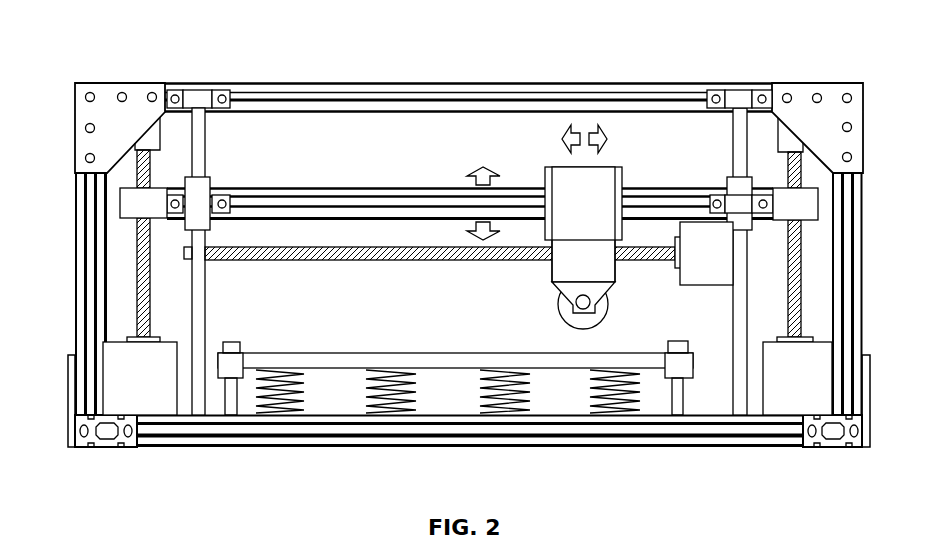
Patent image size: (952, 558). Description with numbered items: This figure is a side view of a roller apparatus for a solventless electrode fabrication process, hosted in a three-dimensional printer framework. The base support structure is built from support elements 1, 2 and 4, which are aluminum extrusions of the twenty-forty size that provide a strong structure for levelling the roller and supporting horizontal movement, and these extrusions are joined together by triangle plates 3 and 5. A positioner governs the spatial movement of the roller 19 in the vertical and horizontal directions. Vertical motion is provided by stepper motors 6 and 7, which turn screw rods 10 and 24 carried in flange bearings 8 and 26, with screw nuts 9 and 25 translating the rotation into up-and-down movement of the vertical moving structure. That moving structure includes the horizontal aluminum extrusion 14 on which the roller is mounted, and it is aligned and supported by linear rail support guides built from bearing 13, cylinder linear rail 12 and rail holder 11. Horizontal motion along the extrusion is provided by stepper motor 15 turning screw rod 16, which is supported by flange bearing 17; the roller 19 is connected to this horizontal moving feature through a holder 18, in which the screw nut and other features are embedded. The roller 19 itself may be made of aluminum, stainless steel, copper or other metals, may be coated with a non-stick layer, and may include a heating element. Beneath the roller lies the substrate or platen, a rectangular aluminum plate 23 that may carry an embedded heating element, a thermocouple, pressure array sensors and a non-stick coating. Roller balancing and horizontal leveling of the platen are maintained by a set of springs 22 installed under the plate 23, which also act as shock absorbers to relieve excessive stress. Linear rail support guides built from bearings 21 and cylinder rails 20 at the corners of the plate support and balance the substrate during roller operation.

The support element 1 is at (102, 262).
The support element 2 is at (282, 96).
The triangle plate 3 is at (107, 88).
The support element 4 is at (90, 430).
The triangle plate 5 is at (72, 393).
The stepper motor 6 is at (120, 378).
The stepper motor 7 is at (812, 368).
The flange bearing 8 is at (787, 140).
The screw nut 9 is at (807, 200).
The screw rod 10 is at (800, 258).
The rail holder 11 is at (740, 95).
The cylinder linear rail 12 is at (740, 152).
The bearing 13 is at (738, 198).
The horizontal aluminum extrusion 14 is at (327, 205).
The stepper motor 15 is at (704, 268).
The screw rod 16 is at (376, 262).
The flange bearing 17 is at (206, 256).
The holder 18 is at (573, 196).
The roller 19 is at (562, 305).
The cylinder rail 20 is at (230, 343).
The bearing 21 is at (247, 348).
The spring 22 is at (397, 372).
The rectangular aluminum plate 23 is at (462, 352).
The screw rod 24 is at (138, 234).
The screw nut 25 is at (135, 206).
The flange bearing 26 is at (150, 130).